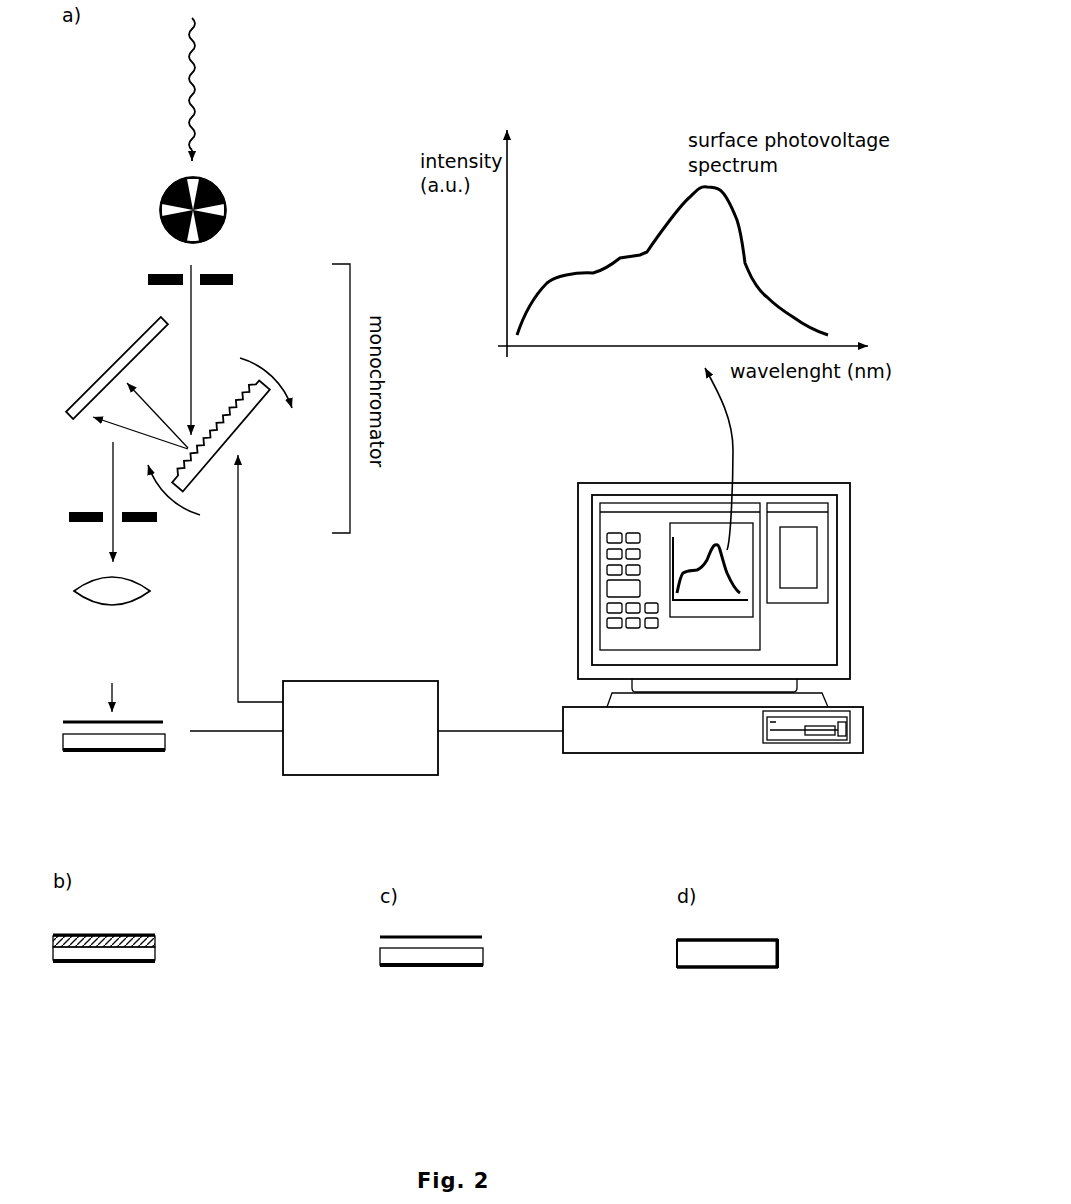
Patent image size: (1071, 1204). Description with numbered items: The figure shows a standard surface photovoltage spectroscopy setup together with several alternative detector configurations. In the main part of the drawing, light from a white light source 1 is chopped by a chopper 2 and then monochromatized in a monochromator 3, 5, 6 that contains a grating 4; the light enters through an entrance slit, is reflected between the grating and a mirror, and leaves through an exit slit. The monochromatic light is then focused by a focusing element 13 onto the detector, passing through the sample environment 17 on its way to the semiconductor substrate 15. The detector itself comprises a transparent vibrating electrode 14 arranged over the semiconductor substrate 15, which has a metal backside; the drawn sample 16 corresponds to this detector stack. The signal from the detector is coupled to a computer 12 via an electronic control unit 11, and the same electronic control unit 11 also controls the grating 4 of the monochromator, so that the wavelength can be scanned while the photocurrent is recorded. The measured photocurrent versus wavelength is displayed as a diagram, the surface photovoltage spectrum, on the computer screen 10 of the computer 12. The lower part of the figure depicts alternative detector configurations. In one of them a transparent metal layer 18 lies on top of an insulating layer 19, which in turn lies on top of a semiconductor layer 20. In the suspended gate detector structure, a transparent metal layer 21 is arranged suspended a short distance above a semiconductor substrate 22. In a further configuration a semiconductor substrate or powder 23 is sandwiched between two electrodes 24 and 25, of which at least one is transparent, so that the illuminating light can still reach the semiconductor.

The white light source 1 is at (242, 89).
The chopper 2 is at (228, 210).
The monochromator 3 is at (222, 277).
The grating 4 is at (220, 436).
The monochromator 5 is at (117, 368).
The monochromator 6 is at (92, 514).
The computer screen 10 is at (695, 595).
The electronic control unit 11 is at (360, 728).
The computer 12 is at (713, 730).
The focusing element 13 is at (85, 590).
The transparent vibrating electrode 14 is at (167, 713).
The semiconductor substrate 15 is at (167, 742).
The sample 16 is at (114, 757).
The sample environment 17 is at (111, 672).
The transparent metal layer 18 is at (156, 930).
The insulating layer 19 is at (158, 942).
The semiconductor layer 20 is at (163, 956).
The transparent metal layer 21 is at (451, 927).
The semiconductor substrate 22 is at (451, 957).
The semiconductor substrate 23 is at (748, 953).
The electrode 24 is at (727, 924).
The electrode 25 is at (727, 983).